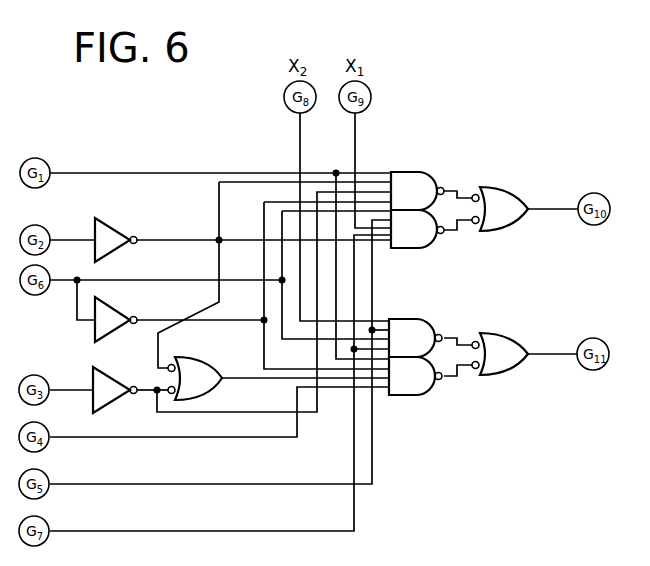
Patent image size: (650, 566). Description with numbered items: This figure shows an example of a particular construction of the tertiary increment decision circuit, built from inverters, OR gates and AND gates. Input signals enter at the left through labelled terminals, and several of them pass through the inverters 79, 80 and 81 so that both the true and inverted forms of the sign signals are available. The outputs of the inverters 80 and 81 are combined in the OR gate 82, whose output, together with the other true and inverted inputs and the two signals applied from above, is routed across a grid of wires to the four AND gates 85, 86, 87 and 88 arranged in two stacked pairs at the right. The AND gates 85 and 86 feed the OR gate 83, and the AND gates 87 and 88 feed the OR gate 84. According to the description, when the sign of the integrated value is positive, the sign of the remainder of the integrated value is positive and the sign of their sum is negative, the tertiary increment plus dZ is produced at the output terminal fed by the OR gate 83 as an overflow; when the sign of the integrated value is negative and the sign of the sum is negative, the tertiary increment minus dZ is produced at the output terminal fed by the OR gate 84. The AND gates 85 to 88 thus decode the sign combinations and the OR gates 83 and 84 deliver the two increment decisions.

The inverter 79 is at (117, 224).
The inverter 80 is at (118, 313).
The inverter 81 is at (112, 375).
The OR gate 82 is at (218, 345).
The OR gate 83 is at (512, 191).
The OR gate 84 is at (512, 337).
The AND gate 85 is at (430, 172).
The AND gate 86 is at (415, 249).
The AND gate 87 is at (425, 319).
The AND gate 88 is at (410, 396).